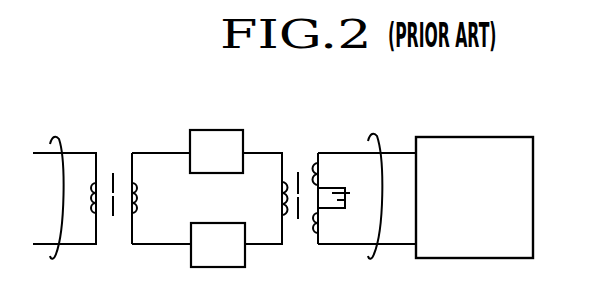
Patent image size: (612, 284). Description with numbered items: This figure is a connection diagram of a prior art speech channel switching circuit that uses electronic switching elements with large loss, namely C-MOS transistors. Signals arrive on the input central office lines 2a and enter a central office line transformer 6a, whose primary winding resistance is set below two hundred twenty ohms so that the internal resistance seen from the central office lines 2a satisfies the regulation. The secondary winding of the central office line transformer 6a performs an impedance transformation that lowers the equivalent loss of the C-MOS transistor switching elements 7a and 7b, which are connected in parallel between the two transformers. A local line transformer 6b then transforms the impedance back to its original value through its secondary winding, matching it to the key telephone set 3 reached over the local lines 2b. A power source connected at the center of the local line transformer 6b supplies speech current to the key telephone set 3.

The input central office lines 2a is at (62, 137).
The central office line transformer 6a is at (114, 167).
The C-MOS transistor switching element 7a is at (225, 130).
The C-MOS transistor switching element 7b is at (225, 223).
The local lines 2b is at (376, 136).
The local line transformer 6b is at (297, 169).
The key telephone set 3 is at (498, 137).